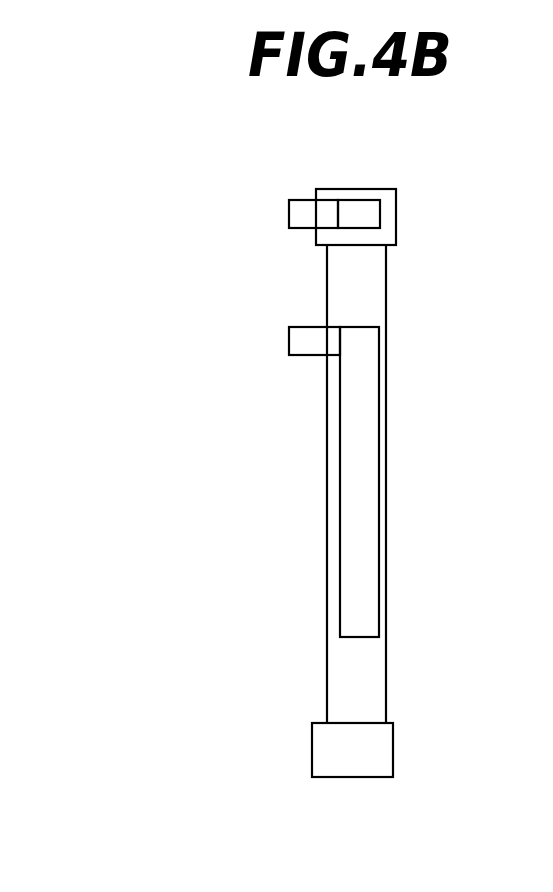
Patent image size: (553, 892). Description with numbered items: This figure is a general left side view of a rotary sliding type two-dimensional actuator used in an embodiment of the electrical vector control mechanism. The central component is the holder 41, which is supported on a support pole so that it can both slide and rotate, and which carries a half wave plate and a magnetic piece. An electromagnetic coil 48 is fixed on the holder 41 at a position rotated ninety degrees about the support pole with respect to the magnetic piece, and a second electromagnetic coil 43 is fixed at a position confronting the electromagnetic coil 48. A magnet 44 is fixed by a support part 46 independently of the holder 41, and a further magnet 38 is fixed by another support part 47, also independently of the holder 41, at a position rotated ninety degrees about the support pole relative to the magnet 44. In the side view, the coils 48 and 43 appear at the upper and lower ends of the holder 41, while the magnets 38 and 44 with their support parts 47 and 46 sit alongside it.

The magnet 38 is at (374, 200).
The holder 41 is at (367, 670).
The electromagnetic coil 43 is at (357, 778).
The magnet 44 is at (368, 428).
The support part 46 is at (320, 360).
The support part 47 is at (303, 228).
The electromagnetic coil 48 is at (397, 222).